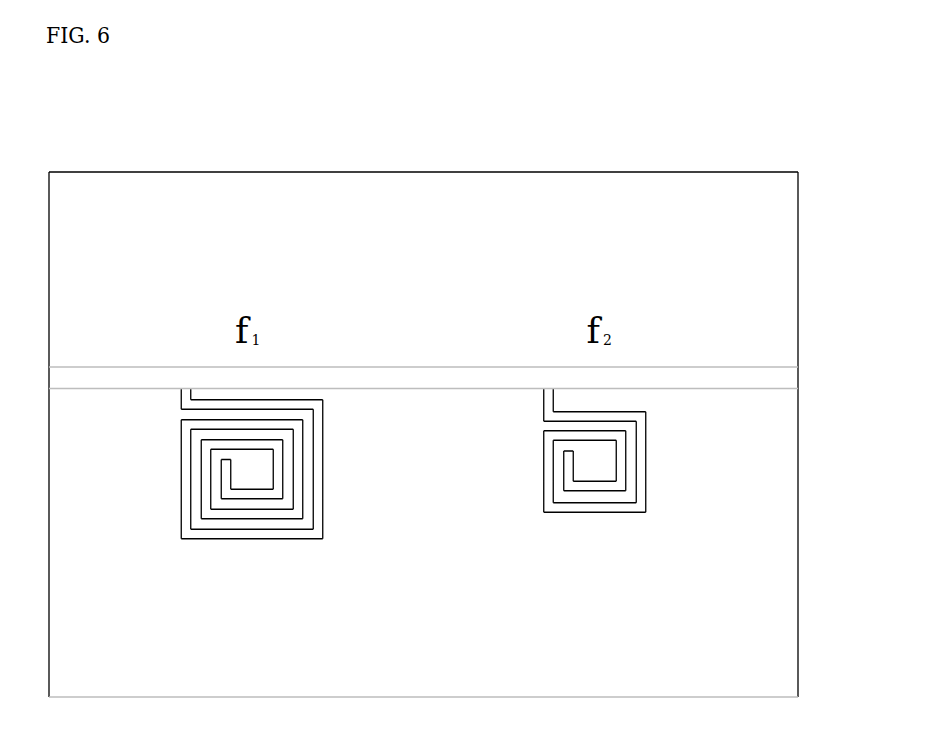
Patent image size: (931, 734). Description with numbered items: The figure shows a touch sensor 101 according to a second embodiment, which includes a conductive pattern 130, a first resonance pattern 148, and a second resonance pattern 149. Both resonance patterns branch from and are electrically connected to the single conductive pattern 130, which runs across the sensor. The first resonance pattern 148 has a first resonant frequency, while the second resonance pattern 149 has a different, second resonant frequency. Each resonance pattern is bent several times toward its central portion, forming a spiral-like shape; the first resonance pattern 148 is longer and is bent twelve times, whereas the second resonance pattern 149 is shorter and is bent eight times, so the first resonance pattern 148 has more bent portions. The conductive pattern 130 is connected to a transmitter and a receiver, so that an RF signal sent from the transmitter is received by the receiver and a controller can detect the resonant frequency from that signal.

The touch sensor 101 is at (461, 114).
The conductive pattern 130 is at (769, 367).
The first resonance pattern 148 is at (265, 539).
The second resonance pattern 149 is at (596, 511).